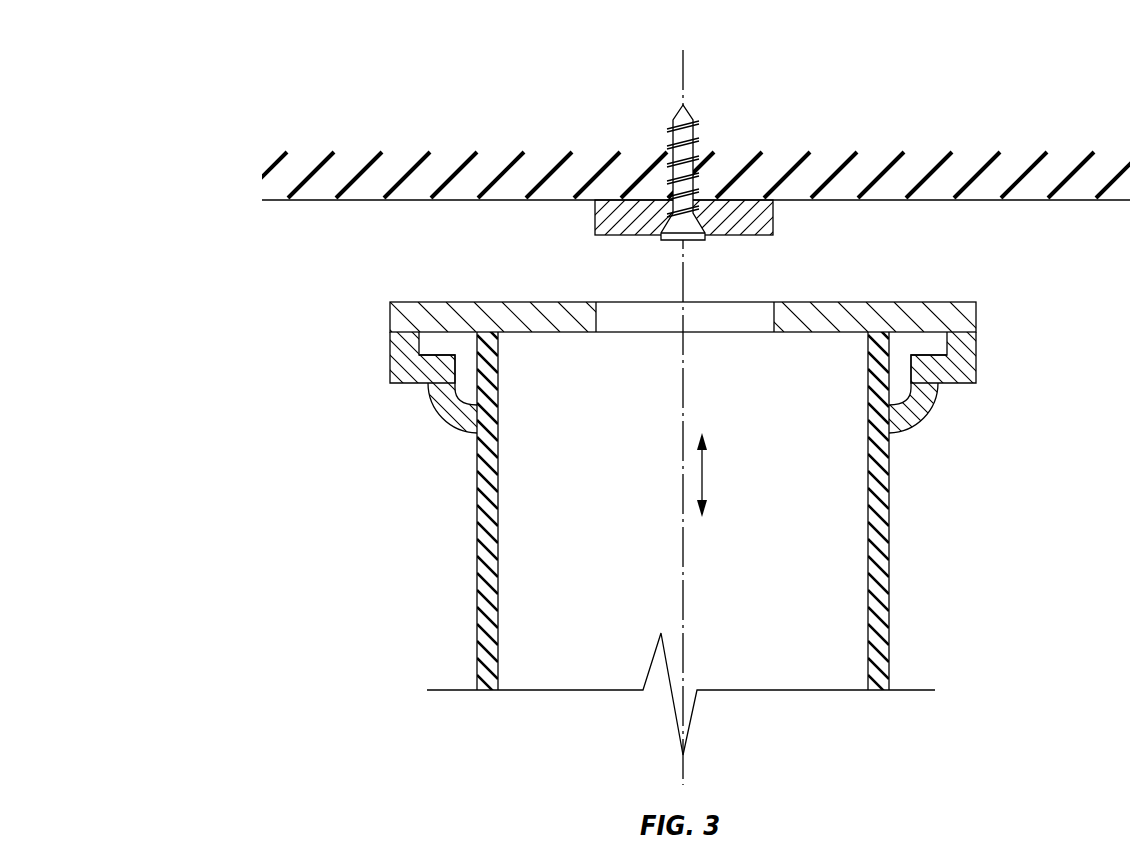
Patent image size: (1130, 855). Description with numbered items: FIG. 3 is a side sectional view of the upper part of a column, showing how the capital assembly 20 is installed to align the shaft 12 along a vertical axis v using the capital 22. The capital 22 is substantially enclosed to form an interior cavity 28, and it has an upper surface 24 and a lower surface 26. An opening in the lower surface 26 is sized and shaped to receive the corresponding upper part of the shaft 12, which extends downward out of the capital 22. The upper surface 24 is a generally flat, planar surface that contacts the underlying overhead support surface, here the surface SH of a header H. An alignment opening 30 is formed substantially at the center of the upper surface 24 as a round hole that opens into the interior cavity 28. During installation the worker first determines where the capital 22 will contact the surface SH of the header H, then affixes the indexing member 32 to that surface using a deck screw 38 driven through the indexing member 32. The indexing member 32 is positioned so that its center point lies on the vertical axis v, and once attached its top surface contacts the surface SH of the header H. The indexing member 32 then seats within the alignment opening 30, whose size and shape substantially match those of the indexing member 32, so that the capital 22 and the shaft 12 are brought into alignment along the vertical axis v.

The shaft 12 is at (702, 536).
The capital assembly 20 is at (283, 359).
The capital 22 is at (680, 337).
The upper surface 24 is at (872, 302).
The lower surface 26 is at (898, 433).
The interior cavity 28 is at (900, 371).
The alignment opening 30 is at (635, 313).
The indexing member 32 is at (775, 222).
The deck screw 38 is at (670, 135).
The header H is at (378, 198).
The surface of the header SH is at (1023, 202).
The vertical axis V is at (683, 58).